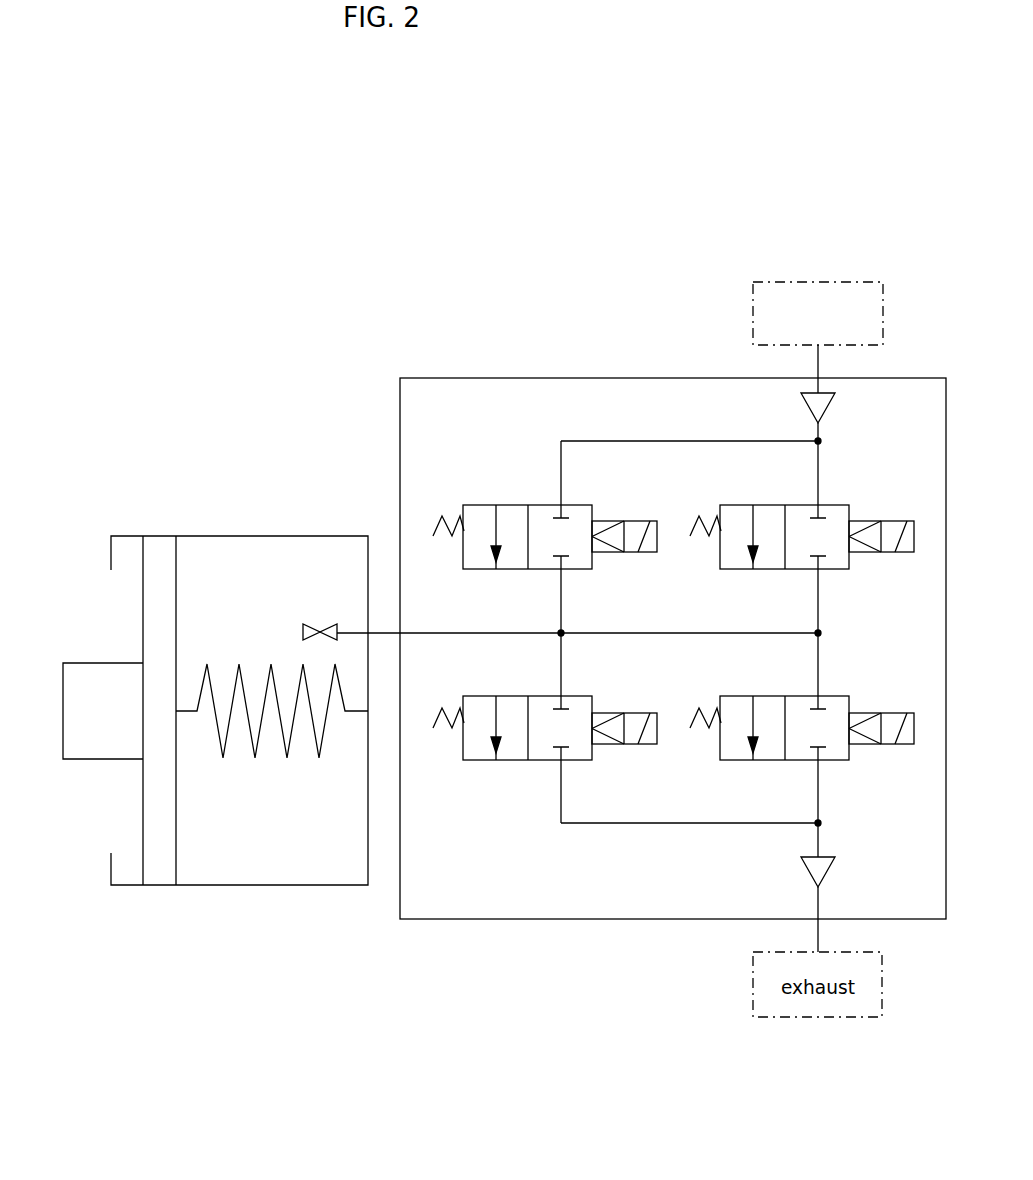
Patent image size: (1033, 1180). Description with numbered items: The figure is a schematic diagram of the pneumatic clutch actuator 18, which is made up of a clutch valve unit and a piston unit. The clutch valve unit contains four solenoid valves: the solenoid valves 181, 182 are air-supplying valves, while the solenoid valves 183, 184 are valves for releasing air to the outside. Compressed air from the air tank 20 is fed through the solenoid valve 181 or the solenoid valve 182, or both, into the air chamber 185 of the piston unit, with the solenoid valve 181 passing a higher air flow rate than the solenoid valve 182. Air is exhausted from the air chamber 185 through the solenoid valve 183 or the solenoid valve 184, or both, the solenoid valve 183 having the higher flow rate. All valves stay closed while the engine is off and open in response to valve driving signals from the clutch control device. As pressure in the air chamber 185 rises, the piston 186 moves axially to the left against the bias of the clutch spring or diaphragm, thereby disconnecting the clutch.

The clutch actuator 18 is at (628, 276).
The air tank 20 is at (818, 313).
The solenoid valve 181 is at (545, 505).
The solenoid valve 182 is at (802, 505).
The solenoid valve 183 is at (545, 696).
The solenoid valve 184 is at (799, 696).
The air chamber 185 is at (269, 585).
The piston 186 is at (108, 760).